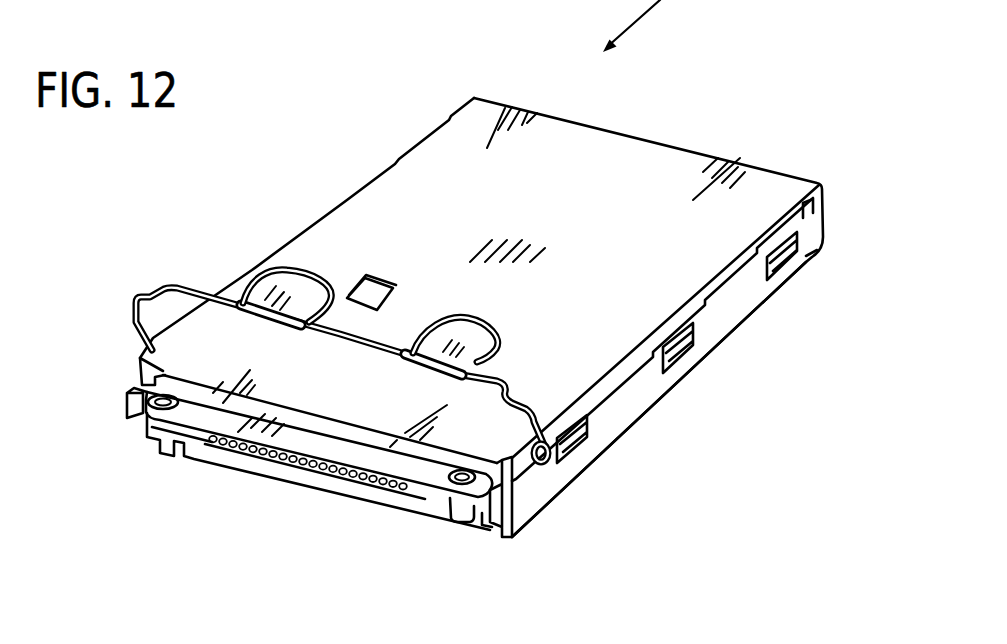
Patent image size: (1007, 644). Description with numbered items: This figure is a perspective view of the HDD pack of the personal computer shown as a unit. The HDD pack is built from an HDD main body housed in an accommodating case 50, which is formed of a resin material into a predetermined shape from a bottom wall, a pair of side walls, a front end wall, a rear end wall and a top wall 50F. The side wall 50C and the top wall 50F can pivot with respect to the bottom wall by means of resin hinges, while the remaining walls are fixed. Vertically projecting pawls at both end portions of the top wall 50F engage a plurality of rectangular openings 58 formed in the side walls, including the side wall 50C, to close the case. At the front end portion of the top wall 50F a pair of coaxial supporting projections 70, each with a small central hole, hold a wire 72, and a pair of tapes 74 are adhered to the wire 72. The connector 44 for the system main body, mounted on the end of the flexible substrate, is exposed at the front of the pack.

The connector for the system main body 44 is at (240, 463).
The accommodating case 50 is at (681, 172).
The top wall 50F is at (753, 184).
The side wall 50C is at (634, 400).
The rectangular openings 58 is at (681, 353).
The supporting projections 70 is at (547, 458).
The wire 72 is at (375, 350).
The tapes 74 is at (468, 332).